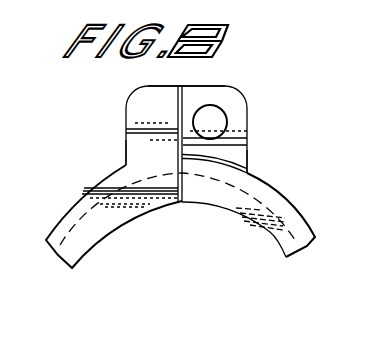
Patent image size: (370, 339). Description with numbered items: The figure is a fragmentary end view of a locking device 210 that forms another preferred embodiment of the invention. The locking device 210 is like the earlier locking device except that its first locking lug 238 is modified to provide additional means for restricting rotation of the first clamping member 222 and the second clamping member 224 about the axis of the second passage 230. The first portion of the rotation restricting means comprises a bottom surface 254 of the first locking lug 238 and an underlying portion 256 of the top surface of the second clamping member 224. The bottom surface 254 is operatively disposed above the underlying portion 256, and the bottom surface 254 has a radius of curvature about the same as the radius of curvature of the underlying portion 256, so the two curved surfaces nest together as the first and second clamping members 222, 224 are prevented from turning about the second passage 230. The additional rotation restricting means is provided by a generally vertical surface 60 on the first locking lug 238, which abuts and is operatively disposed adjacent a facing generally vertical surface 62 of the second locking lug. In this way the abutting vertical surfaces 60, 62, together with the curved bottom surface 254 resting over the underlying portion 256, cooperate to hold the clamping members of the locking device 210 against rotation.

The generally vertical surface 60 is at (182, 122).
The facing generally vertical surface 62 is at (197, 86).
The first locking lug 238 is at (226, 109).
The bottom surface 254 is at (240, 152).
The underlying portion 256 is at (233, 151).
The locking device 210 is at (114, 156).
The first clamping member 222 is at (82, 211).
The second clamping member 224 is at (272, 201).
The second passage 230 is at (167, 238).